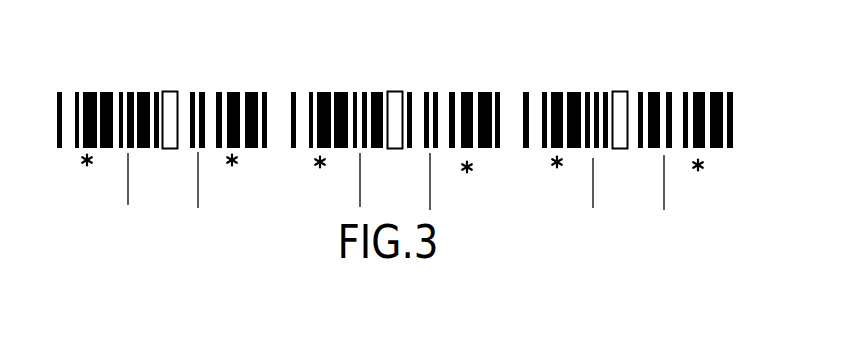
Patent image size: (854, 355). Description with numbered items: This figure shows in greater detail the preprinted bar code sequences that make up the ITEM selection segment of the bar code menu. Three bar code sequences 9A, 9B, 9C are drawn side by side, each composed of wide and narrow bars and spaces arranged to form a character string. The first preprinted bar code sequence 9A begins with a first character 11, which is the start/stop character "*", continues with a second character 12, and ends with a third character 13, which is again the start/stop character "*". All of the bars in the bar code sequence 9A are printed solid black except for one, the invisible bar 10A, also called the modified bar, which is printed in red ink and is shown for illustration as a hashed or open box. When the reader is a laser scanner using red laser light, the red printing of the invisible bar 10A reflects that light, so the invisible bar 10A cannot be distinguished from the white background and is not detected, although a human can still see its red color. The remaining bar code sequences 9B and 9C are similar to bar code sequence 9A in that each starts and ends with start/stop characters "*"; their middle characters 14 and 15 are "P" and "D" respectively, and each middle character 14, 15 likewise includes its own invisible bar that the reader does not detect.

The first preprinted bar code sequence 9A is at (108, 71).
The bar code sequence 9B is at (346, 72).
The bar code sequence 9C is at (568, 80).
The invisible bar 10A is at (176, 92).
The first character 11 is at (82, 167).
The second character 12 is at (163, 170).
The third character 13 is at (233, 170).
The middle character 14 is at (395, 168).
The middle character 15 is at (630, 172).